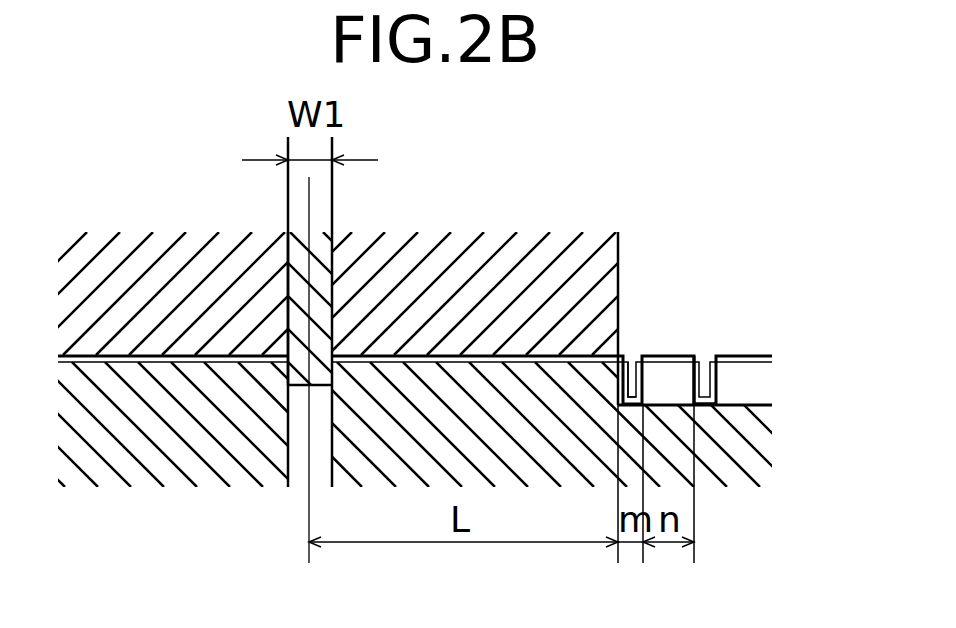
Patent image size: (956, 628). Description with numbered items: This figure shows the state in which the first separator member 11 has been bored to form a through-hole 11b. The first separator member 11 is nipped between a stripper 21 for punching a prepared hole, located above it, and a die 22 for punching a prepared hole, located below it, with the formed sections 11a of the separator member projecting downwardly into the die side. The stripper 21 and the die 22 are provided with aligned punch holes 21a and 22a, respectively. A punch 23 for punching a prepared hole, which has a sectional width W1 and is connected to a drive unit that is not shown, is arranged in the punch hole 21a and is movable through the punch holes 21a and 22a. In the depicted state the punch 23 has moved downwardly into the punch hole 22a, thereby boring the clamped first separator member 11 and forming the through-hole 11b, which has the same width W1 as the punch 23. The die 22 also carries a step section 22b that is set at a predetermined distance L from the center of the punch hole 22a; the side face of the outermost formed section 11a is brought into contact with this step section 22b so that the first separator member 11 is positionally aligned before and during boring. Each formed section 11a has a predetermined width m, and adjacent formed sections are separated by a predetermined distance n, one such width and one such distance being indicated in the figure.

The first separator member 11 is at (750, 357).
The formed section 11a is at (695, 412).
The through-hole 11b is at (289, 359).
The stripper 21 is at (472, 267).
The punch hole 21a is at (289, 322).
The die 22 is at (532, 445).
The punch hole 22a is at (289, 463).
The step section 22b is at (636, 380).
The punch 23 is at (289, 248).